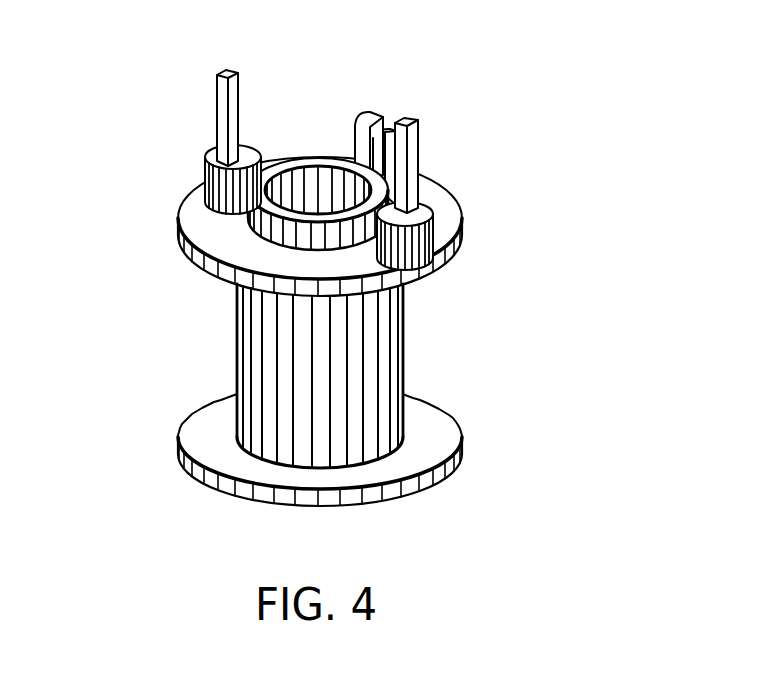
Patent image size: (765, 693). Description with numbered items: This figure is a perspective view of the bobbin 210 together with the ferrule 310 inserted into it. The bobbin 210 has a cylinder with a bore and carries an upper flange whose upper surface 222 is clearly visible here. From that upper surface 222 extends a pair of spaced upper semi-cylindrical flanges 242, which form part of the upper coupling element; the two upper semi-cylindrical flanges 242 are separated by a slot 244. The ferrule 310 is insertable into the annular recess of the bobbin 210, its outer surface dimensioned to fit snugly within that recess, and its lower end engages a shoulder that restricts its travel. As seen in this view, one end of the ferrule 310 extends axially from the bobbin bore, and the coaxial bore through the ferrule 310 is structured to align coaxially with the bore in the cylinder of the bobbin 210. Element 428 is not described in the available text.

The bobbin 210 is at (474, 187).
The upper surface 222 is at (460, 229).
The upper semi-cylindrical flanges 242 is at (366, 121).
The slot 244 is at (394, 112).
The ferrule 310 is at (240, 232).
The lower flange 428 is at (448, 463).